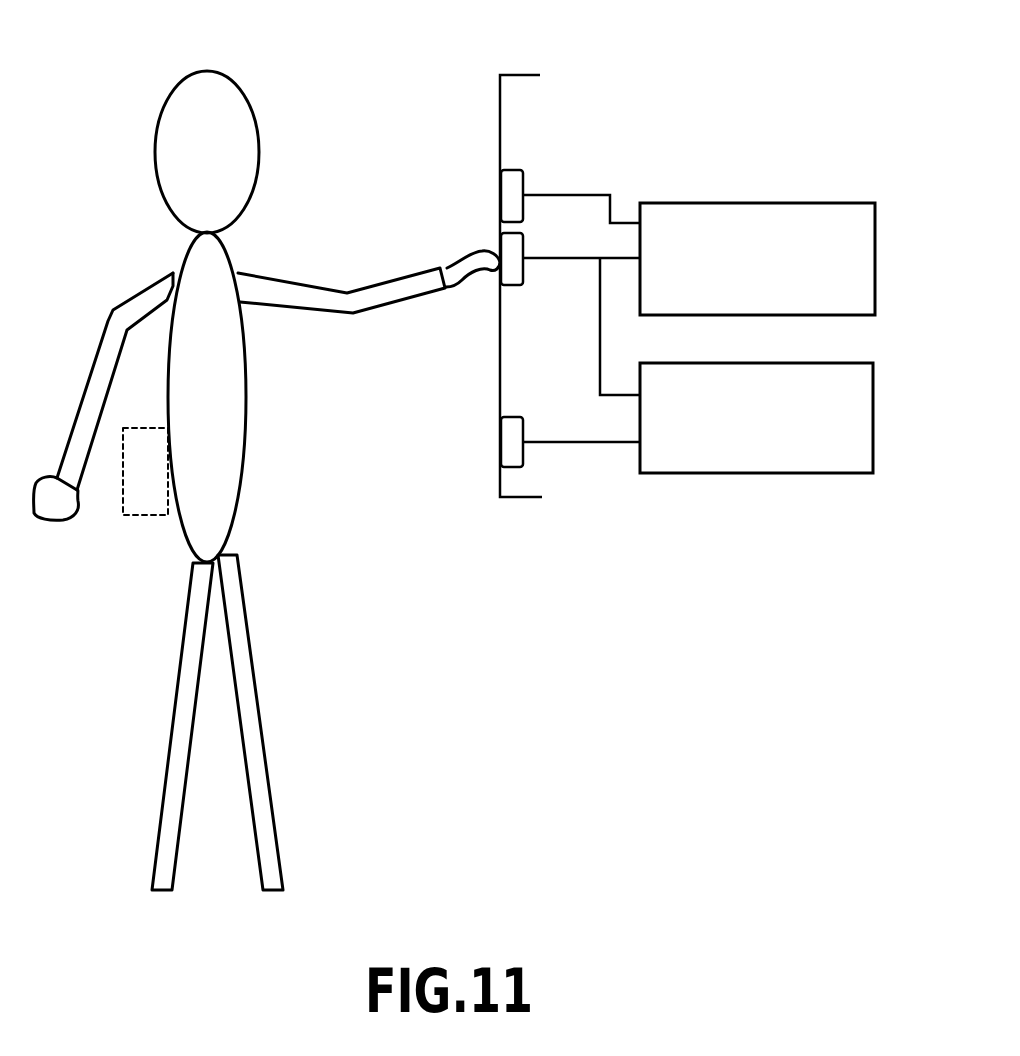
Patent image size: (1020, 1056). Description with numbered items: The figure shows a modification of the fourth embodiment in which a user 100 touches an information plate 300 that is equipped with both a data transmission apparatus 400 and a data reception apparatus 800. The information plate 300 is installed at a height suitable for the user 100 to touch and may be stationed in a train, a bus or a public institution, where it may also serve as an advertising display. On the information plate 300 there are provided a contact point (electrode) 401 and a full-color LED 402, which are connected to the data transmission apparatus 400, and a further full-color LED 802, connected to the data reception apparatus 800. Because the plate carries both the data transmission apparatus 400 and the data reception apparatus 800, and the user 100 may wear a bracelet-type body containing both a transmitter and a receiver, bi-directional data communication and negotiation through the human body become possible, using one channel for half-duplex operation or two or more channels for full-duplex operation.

The user 100 is at (163, 100).
The information plate 300 is at (527, 73).
The data transmission apparatus 400 is at (797, 203).
The contact point (electrode) 401 is at (523, 285).
The full-color LED 402 is at (523, 172).
The data reception apparatus 800 is at (793, 473).
The full-color LED 802 is at (523, 467).